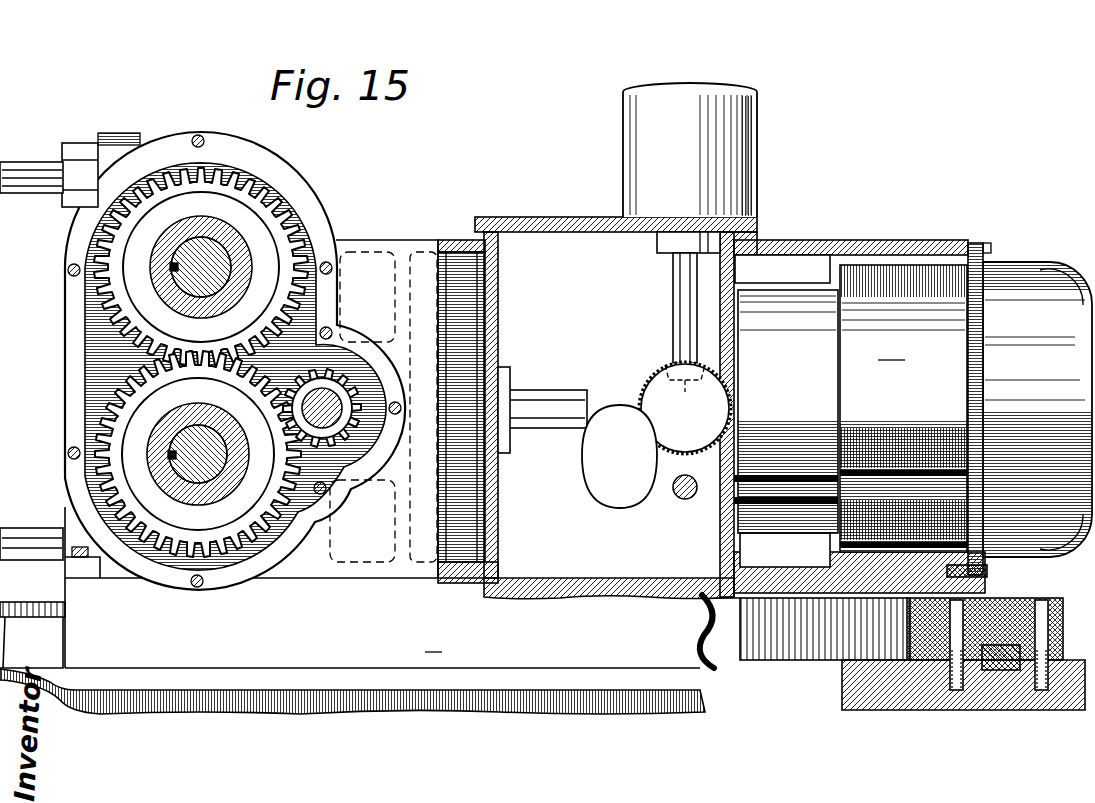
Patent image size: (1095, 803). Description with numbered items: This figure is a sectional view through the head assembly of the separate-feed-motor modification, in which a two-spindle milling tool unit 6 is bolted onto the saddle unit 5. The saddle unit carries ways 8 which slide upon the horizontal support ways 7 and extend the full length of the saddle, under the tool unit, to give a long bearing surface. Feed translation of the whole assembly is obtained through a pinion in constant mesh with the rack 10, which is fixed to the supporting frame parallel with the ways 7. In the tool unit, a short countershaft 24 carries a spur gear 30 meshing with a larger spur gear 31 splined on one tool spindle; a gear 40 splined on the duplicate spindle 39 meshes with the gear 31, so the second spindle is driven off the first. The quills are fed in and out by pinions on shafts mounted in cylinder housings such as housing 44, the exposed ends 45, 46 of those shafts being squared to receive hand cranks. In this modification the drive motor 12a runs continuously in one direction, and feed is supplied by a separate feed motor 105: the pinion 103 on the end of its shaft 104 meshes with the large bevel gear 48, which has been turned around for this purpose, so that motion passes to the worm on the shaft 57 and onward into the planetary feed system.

The saddle unit 5 is at (804, 239).
The tool unit 6 is at (399, 238).
The horizontal ways 7 is at (38, 640).
The ways 8 is at (357, 646).
The rack 10 is at (780, 650).
The drive motor 12a is at (903, 408).
The short countershaft 24 is at (327, 405).
The spur gear 30 is at (323, 385).
The larger spur gear 31 is at (118, 425).
The duplicate spindle 39 is at (215, 265).
The gear 40 is at (245, 205).
The cylinder housing 44 is at (82, 155).
The exposed shaft end 45 is at (24, 528).
The exposed shaft end 46 is at (32, 188).
The large bevel gear 48 is at (640, 398).
The worm shaft 57 is at (682, 496).
The pinion 103 is at (685, 408).
The feed motor shaft 104 is at (673, 290).
The feed motor 105 is at (677, 90).